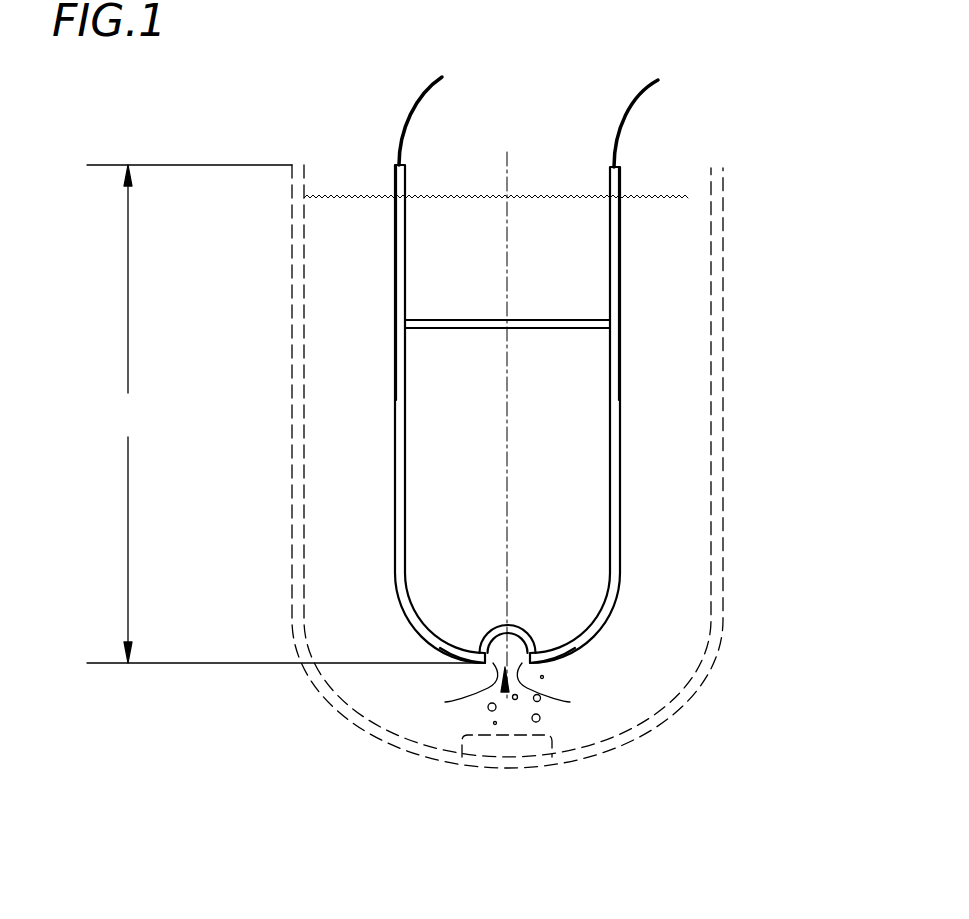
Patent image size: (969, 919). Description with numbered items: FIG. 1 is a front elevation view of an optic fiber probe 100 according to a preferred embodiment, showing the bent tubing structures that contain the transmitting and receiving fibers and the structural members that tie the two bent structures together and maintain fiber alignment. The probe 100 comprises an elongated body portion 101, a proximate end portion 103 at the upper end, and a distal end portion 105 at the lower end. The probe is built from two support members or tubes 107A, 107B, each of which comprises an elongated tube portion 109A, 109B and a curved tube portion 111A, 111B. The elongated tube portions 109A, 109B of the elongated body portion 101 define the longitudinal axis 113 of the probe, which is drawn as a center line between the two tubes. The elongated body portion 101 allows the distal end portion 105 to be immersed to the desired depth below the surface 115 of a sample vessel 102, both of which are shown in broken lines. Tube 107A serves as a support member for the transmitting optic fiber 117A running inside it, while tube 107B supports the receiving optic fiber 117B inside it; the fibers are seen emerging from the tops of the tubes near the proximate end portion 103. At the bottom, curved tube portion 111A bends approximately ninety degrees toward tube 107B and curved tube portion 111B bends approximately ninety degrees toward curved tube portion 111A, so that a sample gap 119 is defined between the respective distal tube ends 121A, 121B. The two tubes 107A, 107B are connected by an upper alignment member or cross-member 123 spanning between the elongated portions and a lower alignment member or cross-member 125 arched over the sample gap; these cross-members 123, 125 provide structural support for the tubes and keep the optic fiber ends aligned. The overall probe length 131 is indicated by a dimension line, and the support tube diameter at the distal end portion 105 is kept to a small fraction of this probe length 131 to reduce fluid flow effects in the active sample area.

The optic fiber probe 100 is at (219, 183).
The elongated body portion 101 is at (672, 347).
The sample vessel 102 is at (292, 296).
The proximate end portion 103 is at (654, 175).
The distal end portion 105 is at (658, 662).
The tube 107A is at (395, 510).
The tube 107B is at (620, 512).
The elongated tube portion 109A is at (395, 390).
The elongated tube portion 109B is at (620, 392).
The curved tube portion 111A is at (415, 645).
The curved tube portion 111B is at (598, 630).
The longitudinal axis 113 is at (507, 168).
The surface 115 is at (335, 198).
The transmitting optic fiber 117A is at (420, 98).
The receiving optic fiber 117B is at (640, 92).
The sample gap 119 is at (503, 690).
The distal tube end 121A is at (445, 702).
The distal tube end 121B is at (570, 702).
The upper alignment member or cross-member 123 is at (588, 318).
The lower alignment member or cross-member 125 is at (530, 637).
The probe length 131 is at (680, 138).